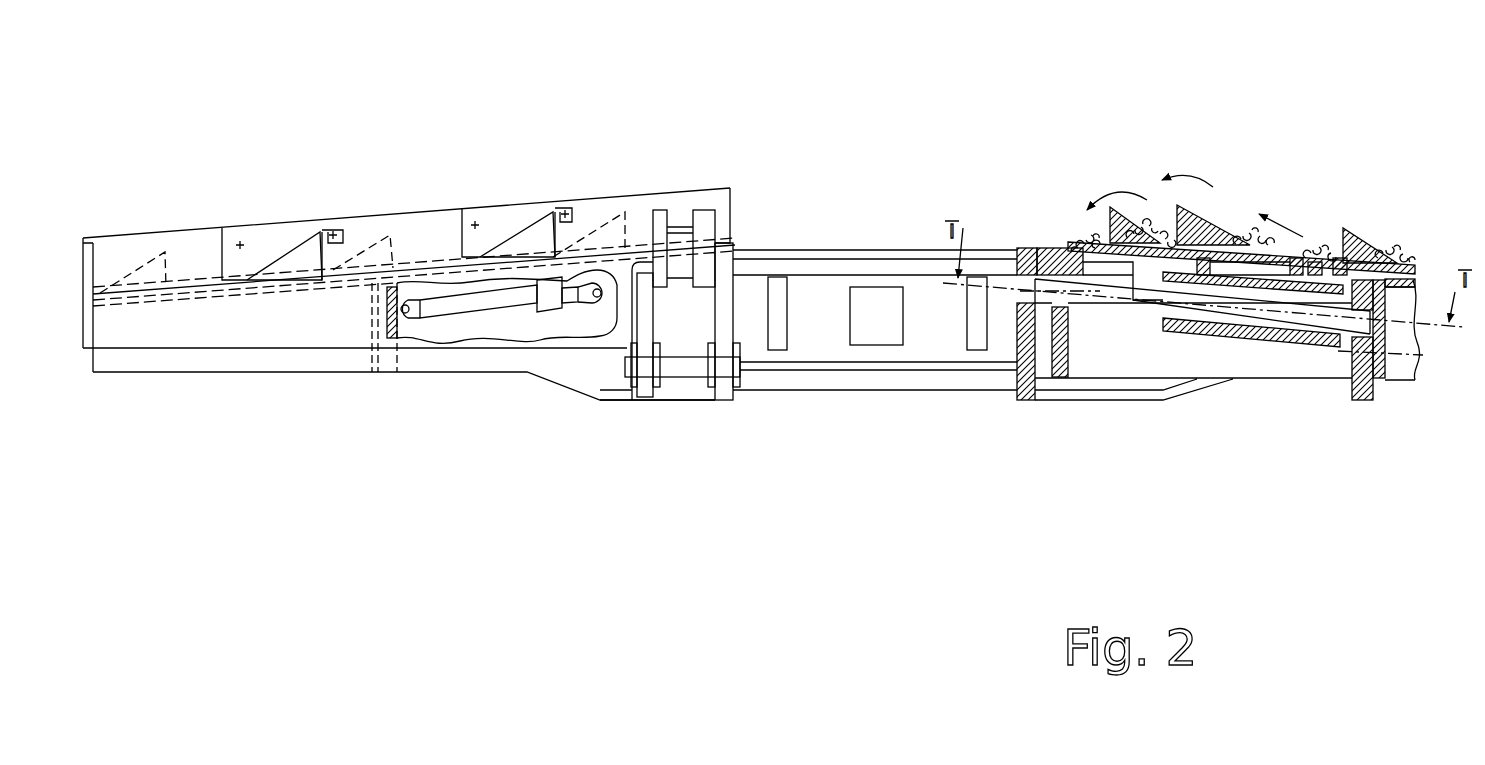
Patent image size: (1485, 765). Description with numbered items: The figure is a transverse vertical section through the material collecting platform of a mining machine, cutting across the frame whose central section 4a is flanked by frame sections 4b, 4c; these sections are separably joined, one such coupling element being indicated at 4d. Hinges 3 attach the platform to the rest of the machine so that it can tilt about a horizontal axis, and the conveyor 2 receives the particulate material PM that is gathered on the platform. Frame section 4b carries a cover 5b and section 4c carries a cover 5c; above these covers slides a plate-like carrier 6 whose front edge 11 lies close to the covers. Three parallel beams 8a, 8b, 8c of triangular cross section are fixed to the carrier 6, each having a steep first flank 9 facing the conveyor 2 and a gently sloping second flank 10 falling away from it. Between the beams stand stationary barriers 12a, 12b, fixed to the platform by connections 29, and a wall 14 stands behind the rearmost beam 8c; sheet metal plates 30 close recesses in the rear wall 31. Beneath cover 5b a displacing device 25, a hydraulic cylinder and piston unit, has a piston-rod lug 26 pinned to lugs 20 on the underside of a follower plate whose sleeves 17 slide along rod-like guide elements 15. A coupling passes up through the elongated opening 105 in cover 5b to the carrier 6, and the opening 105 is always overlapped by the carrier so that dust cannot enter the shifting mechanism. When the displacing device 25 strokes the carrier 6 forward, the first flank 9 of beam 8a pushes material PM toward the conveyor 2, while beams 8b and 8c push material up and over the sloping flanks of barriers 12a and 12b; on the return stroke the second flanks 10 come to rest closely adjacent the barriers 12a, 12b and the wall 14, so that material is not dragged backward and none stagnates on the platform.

The conveyor 2 is at (848, 275).
The hinges 3 is at (700, 420).
The central section 4a is at (810, 350).
The frame section 4b is at (597, 343).
The frame section 4c is at (175, 333).
The coupling element 4d is at (1418, 352).
The cover 5b is at (1067, 245).
The cover 5c is at (1412, 257).
The carrier 6 is at (1318, 257).
The beam 8a is at (602, 250).
The beam 8b is at (377, 262).
The beam 8c is at (147, 275).
The first flank 9 is at (1100, 237).
The second flank 10 is at (1382, 255).
The front edge 11 is at (1087, 237).
The barrier 12a is at (531, 233).
The barrier 12b is at (297, 262).
The wall 14 is at (85, 238).
The guide element 15 is at (1148, 307).
The sleeve 17 is at (1292, 333).
The lug 20 is at (590, 300).
The displacing device 25 is at (447, 307).
The lug 26 is at (572, 300).
The connection 29 is at (273, 288).
The sheet metal plate 30 is at (488, 223).
The rear wall 31 is at (197, 250).
The opening 105 is at (1133, 260).
The particulate material PM is at (1237, 240).